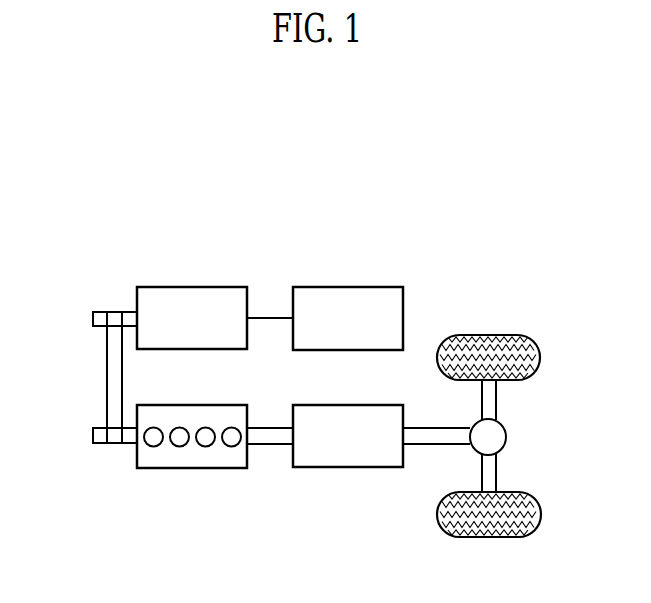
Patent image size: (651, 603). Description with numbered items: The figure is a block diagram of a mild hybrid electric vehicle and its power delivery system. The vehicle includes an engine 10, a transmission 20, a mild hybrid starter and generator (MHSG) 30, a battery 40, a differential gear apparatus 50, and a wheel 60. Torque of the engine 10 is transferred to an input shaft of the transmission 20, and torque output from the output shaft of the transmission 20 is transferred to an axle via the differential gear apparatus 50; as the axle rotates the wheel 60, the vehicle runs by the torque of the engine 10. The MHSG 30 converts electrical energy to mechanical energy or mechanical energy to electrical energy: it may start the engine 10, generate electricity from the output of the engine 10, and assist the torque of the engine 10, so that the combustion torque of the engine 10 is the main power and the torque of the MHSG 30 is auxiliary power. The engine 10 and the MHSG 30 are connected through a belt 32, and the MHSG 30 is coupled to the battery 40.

The engine 10 is at (193, 470).
The transmission 20 is at (348, 470).
The mild hybrid starter and generator (MHSG) 30 is at (191, 287).
The belt 32 is at (107, 374).
The battery 40 is at (346, 287).
The differential gear apparatus 50 is at (507, 436).
The wheel 60 is at (488, 335).